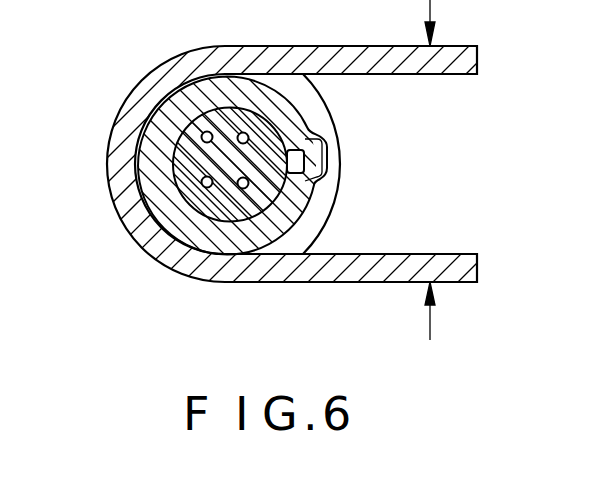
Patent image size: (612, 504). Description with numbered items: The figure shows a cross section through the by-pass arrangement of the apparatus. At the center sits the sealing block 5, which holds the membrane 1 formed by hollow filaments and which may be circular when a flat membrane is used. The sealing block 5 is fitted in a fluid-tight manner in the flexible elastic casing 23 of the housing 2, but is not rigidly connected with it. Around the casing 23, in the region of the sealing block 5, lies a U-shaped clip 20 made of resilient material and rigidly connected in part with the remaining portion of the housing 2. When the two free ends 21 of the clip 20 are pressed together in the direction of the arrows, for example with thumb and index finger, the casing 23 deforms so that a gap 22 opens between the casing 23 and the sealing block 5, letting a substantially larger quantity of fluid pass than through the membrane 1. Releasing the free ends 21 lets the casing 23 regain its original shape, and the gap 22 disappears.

The membrane 1 is at (180, 115).
The housing 2 is at (307, 232).
The sealing block 5 is at (195, 162).
The U-shaped clip 20 is at (125, 145).
The free ends 21 is at (472, 305).
The gap 22 is at (293, 160).
The flexible elastic casing 23 is at (298, 188).